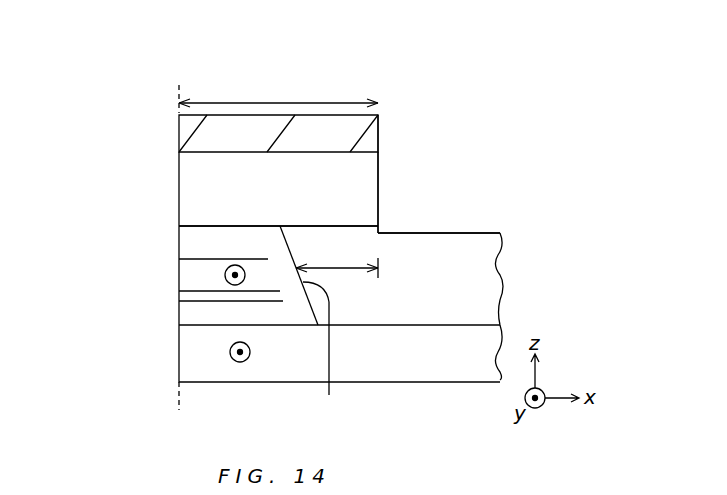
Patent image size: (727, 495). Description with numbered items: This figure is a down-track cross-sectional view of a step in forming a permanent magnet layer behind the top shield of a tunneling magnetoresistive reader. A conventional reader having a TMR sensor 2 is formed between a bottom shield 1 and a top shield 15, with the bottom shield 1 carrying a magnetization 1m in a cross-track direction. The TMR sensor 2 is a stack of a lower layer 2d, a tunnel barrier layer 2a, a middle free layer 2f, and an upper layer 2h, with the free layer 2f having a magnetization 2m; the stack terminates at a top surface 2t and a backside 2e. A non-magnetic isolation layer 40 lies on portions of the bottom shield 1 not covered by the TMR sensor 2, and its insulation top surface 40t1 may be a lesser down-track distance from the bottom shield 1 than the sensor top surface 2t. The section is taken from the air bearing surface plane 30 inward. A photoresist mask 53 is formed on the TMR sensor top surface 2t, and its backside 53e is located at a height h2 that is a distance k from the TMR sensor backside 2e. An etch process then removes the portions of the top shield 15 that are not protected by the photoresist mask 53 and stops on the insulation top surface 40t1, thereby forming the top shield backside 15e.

The photoresist mask 53 is at (180, 128).
The photoresist mask backside 53e is at (378, 128).
The top shield 15 is at (190, 178).
The top shield backside 15e is at (378, 190).
The TMR sensor 2 is at (118, 228).
The top surface of the TMR sensor 2t is at (195, 225).
The upper layer 2h is at (190, 242).
The middle free layer 2f is at (190, 272).
The tunnel barrier layer 2a is at (190, 296).
The lower layer 2d is at (190, 318).
The TMR sensor backside 2e is at (312, 323).
The magnetization of the free layer 2m is at (253, 277).
The bottom shield 1 is at (190, 348).
The magnetization in the bottom shield 1m is at (257, 354).
The non-magnetic isolation layer 40 is at (494, 257).
The insulation top surface 40t1 is at (450, 233).
The air bearing surface 30 is at (179, 252).
The height h2 is at (278, 92).
The distance k is at (337, 259).